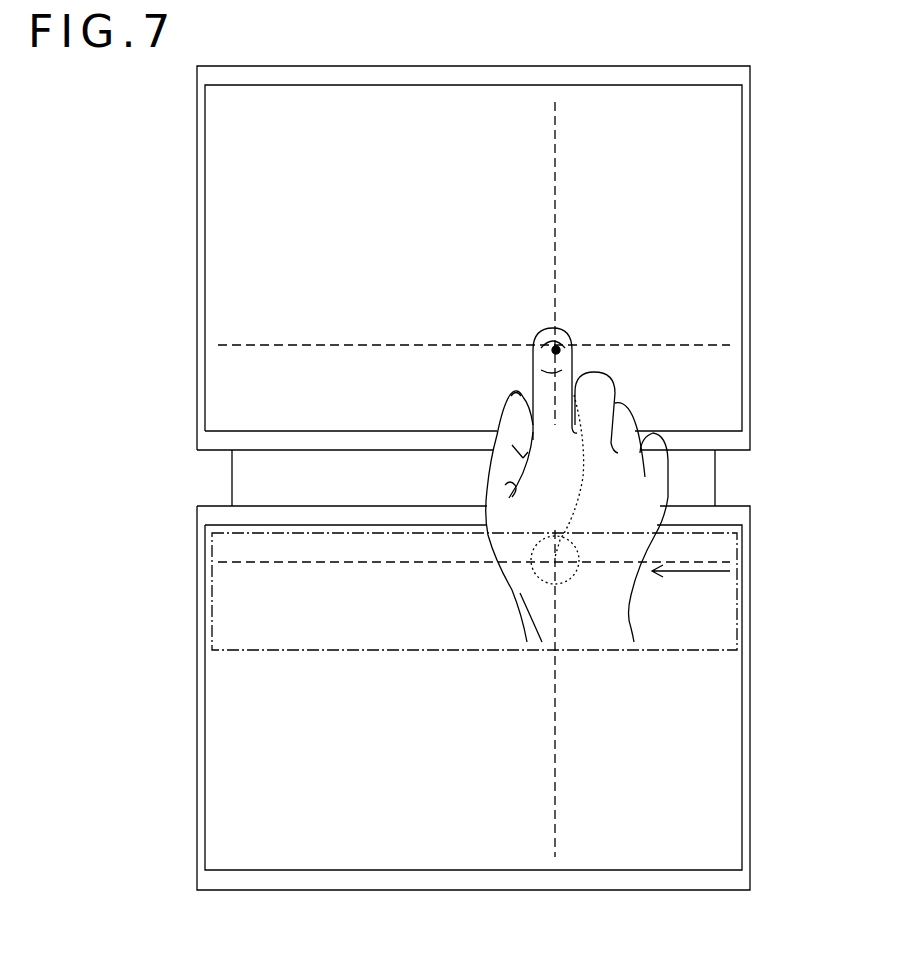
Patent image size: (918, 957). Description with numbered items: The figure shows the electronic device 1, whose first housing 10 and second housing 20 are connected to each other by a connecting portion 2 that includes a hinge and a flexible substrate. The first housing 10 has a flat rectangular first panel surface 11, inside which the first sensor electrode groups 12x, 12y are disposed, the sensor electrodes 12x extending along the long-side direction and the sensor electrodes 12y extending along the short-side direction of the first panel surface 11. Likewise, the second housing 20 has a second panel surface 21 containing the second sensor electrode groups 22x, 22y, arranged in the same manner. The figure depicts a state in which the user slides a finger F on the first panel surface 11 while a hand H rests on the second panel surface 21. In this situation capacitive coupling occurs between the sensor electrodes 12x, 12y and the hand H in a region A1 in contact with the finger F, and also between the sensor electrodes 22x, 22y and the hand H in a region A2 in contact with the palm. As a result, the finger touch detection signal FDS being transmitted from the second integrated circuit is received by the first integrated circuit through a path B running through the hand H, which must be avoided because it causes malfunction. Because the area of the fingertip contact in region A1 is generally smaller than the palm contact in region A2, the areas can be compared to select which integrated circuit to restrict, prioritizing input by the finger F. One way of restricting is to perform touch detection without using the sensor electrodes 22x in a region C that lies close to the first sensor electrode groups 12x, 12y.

The electronic device 1 is at (506, 478).
The connecting portion 2 is at (715, 472).
The first housing 10 is at (750, 273).
The first panel surface 11 is at (737, 315).
The sensor electrodes 12x is at (358, 342).
The sensor electrodes 12y is at (557, 233).
The second housing 20 is at (750, 665).
The second panel surface 21 is at (740, 710).
The sensor electrodes 22x is at (355, 565).
The sensor electrodes 22y is at (557, 742).
The region A1 is at (550, 330).
The region A2 is at (565, 588).
The path B is at (581, 476).
The region C is at (373, 653).
The finger F is at (540, 366).
The hand H is at (622, 627).
The finger touch detection signal FDS is at (691, 582).